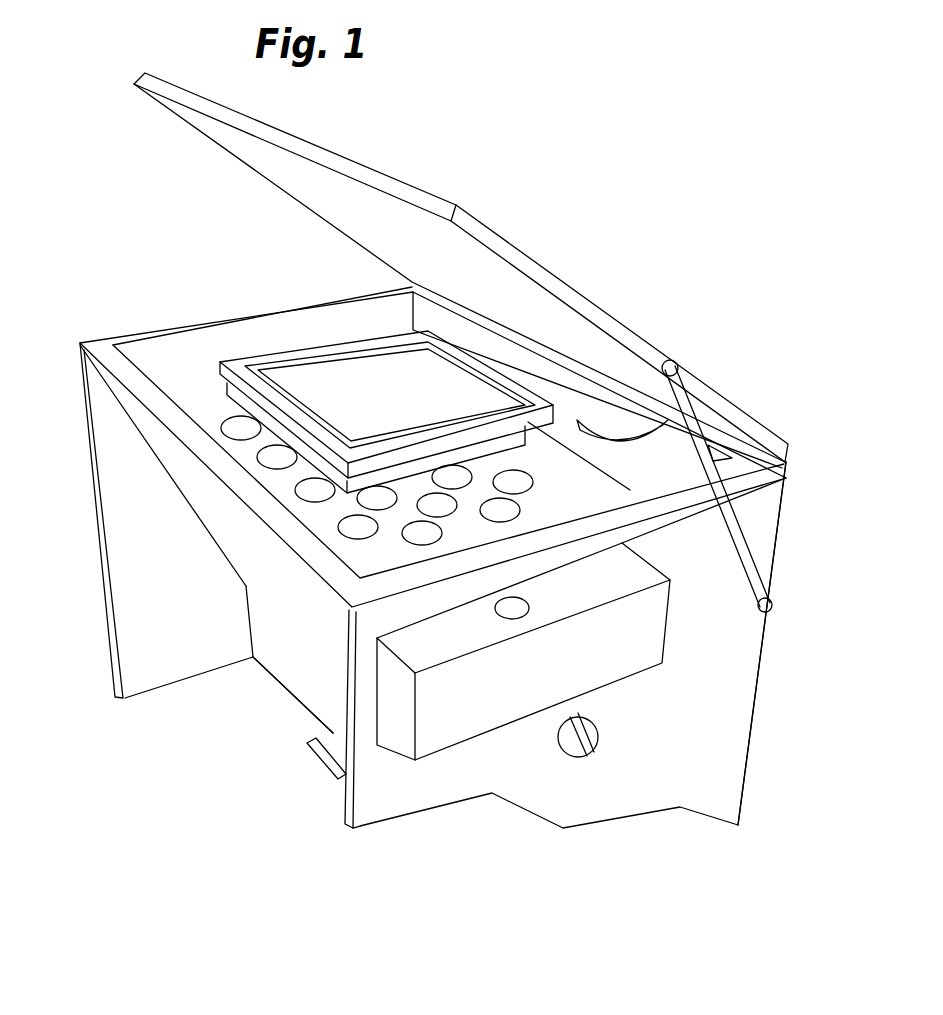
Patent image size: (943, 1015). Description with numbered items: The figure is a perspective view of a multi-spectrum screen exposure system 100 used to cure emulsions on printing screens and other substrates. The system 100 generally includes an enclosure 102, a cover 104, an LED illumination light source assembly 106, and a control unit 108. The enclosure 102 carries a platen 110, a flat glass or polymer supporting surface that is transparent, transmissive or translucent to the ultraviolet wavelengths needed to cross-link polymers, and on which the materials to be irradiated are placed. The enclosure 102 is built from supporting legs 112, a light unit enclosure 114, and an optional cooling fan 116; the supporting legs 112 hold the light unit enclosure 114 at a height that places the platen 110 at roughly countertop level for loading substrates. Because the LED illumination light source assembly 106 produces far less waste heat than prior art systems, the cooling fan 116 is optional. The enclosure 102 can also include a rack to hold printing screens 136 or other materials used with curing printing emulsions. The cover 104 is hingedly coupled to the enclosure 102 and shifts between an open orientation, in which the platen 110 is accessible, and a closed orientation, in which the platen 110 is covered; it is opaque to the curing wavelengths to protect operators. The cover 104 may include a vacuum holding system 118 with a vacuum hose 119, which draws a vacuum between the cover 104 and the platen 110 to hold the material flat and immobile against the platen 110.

The multi-spectrum screen exposure system 100 is at (659, 259).
The enclosure 102 is at (772, 636).
The cover 104 is at (350, 177).
The LED illumination light source assembly 106 is at (290, 572).
The control unit 108 is at (632, 642).
The platen 110 is at (172, 357).
The supporting legs 112 is at (113, 660).
The light unit enclosure 114 is at (307, 620).
The cooling fan 116 is at (593, 757).
The vacuum holding system 118 is at (786, 443).
The vacuum hose 119 is at (605, 432).
The printing screens 136 is at (327, 406).